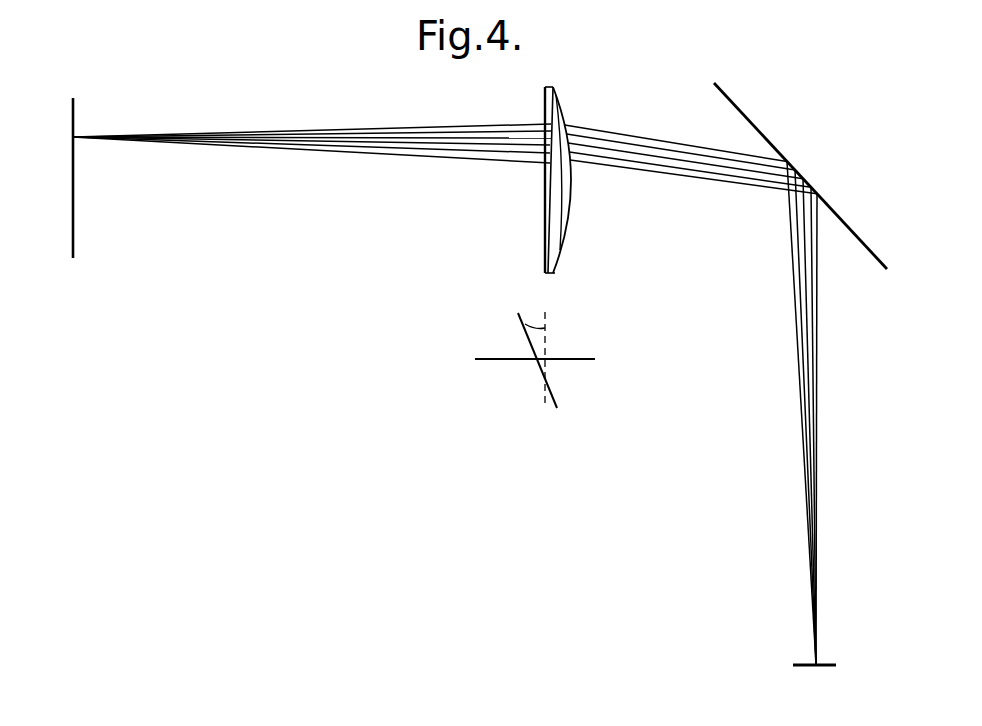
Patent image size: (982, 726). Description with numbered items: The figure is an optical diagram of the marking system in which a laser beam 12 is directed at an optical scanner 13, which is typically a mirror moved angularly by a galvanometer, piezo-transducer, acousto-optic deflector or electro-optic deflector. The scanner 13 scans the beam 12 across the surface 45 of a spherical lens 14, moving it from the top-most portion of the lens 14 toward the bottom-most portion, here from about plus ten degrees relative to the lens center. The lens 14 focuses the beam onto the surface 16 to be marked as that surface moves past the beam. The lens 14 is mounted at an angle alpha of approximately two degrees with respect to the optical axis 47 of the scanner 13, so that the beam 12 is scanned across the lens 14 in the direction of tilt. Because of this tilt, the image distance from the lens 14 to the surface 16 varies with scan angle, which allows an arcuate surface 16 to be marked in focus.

The laser beam 12 is at (817, 479).
The optical scanner 13 is at (757, 128).
The lens 14 is at (562, 252).
The surface to be marked 16 is at (75, 207).
The lens surface 45 is at (565, 112).
The optical axis 47 is at (344, 149).